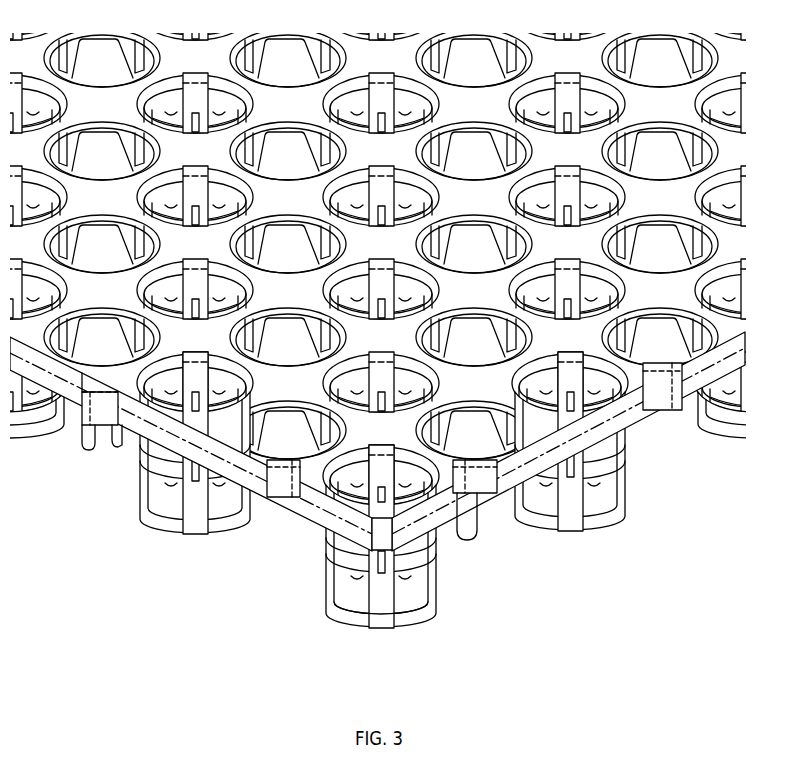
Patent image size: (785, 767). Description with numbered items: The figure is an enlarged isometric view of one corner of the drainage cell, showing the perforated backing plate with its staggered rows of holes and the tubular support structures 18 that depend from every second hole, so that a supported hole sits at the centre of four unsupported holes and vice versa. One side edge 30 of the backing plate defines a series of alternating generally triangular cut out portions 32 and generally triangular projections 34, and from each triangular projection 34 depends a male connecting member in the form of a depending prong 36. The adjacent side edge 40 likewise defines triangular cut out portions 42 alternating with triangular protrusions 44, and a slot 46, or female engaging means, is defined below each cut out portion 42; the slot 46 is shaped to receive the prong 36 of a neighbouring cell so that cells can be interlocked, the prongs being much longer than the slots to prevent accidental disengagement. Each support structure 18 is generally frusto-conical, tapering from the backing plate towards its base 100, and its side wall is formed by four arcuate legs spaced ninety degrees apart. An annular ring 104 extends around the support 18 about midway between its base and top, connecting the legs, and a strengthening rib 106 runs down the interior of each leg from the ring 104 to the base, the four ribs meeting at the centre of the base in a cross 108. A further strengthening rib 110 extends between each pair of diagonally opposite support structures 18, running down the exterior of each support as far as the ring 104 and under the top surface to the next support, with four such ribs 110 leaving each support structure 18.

The tubular support structure 18 is at (337, 553).
The side edge 30 is at (257, 500).
The triangular cut out portion 32 is at (287, 497).
The triangular projection 34 is at (100, 410).
The depending prong 36 is at (84, 450).
The adjacent side edge 40 is at (523, 463).
The triangular cut out portion 42 is at (478, 500).
The triangular protrusion 44 is at (664, 410).
The slot 46 is at (466, 500).
The base of the support structure 100 is at (407, 622).
The annular ring 104 is at (608, 463).
The strengthening rib 106 is at (157, 487).
The cross 108 is at (353, 593).
The further strengthening rib 110 is at (577, 467).